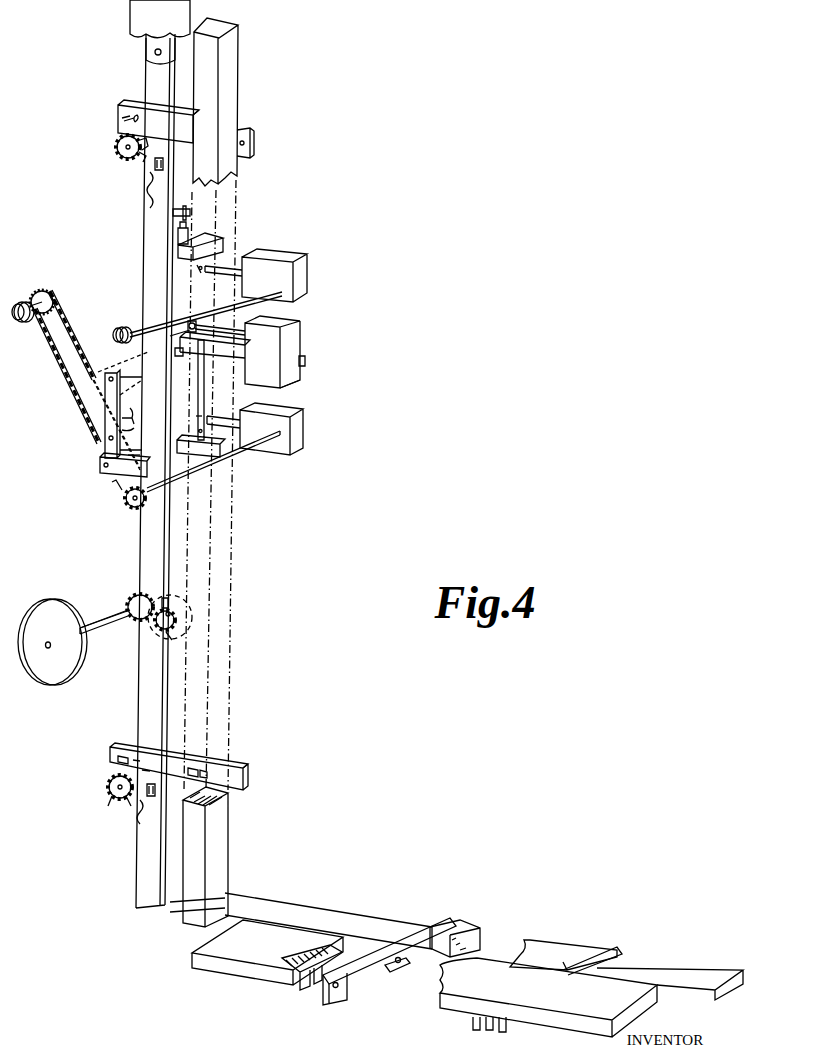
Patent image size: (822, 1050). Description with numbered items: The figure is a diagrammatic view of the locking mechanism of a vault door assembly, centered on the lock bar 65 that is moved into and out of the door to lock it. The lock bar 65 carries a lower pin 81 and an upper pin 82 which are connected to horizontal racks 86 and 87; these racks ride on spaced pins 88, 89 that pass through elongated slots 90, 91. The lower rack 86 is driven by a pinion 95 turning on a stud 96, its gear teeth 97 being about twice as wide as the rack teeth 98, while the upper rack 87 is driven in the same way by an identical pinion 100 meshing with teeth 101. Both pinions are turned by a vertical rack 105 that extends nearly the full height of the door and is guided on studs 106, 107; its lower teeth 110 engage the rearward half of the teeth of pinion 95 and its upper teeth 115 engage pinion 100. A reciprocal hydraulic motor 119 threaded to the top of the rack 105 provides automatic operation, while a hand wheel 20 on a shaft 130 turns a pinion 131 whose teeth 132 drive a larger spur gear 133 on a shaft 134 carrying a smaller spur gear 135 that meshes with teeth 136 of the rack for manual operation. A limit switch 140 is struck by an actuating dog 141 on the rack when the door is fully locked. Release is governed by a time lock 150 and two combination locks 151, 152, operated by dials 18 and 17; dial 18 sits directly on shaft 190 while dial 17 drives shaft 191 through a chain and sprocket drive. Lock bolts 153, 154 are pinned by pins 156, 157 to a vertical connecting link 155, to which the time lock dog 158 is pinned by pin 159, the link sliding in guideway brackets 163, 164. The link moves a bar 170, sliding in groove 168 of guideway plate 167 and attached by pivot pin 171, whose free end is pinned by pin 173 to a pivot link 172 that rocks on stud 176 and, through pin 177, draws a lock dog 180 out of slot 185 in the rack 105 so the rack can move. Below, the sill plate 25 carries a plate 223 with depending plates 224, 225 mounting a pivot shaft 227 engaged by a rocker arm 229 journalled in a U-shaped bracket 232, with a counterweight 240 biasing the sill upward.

The combination lock dial 17 is at (26, 325).
The combination lock dial 18 is at (118, 332).
The hand wheel 20 is at (48, 605).
The sill plate 25 is at (640, 1007).
The lock bar 65 is at (237, 47).
The rearwardly extending pin 81 is at (249, 779).
The rearwardly extending pin 82 is at (255, 143).
The lower rack 86 is at (242, 764).
The upper rack 87 is at (203, 113).
The horizontal spaced pin 88 is at (193, 766).
The horizontal spaced pin 89 is at (120, 754).
The elongated slot 90 is at (205, 768).
The elongated slot 91 is at (138, 758).
The pinion 95 is at (110, 805).
The stud 96 is at (108, 794).
The gear teeth 97 is at (131, 805).
The rack teeth 98 is at (142, 770).
The pinion 100 is at (125, 160).
The rack teeth 101 is at (190, 130).
The vertical rack 105 is at (150, 270).
The stud 106 is at (164, 166).
The stud 107 is at (158, 795).
The gear teeth 110 is at (150, 819).
The teeth 115 is at (152, 190).
The reciprocal hydraulic motor 119 is at (160, 32).
The shaft 130 is at (86, 620).
The pinion 131 is at (130, 608).
The pinion teeth 132 is at (144, 594).
The spur gear 133 is at (154, 626).
The shaft 134 is at (178, 642).
The spur gear 135 is at (178, 612).
The rack teeth 136 is at (168, 596).
The limit switch 140 is at (176, 236).
The actuating dog 141 is at (191, 214).
The time lock 150 is at (300, 340).
The upper combination lock 151 is at (308, 273).
The lower combination lock 152 is at (304, 433).
The lock bolt 153 is at (243, 273).
The lock bolt 154 is at (241, 425).
The vertical connecting link 155 is at (206, 388).
The connecting pin 156 is at (186, 278).
The connecting pin 157 is at (196, 417).
The lock dog 158 is at (235, 326).
The connecting pin 159 is at (167, 340).
The guideway bracket 163 is at (222, 460).
The guideway bracket 164 is at (224, 246).
The guideway plate 167 is at (300, 380).
The groove 168 is at (306, 362).
The movable bar 170 is at (228, 352).
The pivot pin 171 is at (197, 352).
The pivot link 172 is at (140, 398).
The pivot pin 173 is at (111, 373).
The stud 176 is at (136, 428).
The pin 177 is at (103, 470).
The lock dog 180 is at (126, 478).
The slot 185 is at (142, 455).
The shaft 190 is at (290, 290).
The shaft 191 is at (284, 452).
The plate 223 is at (345, 1000).
The depending supporting plate 224 is at (306, 992).
The depending supporting plate 225 is at (508, 1020).
The horizontal pivot shaft 227 is at (401, 962).
The rocker arm 229 is at (425, 930).
The U-shaped mounting bracket 232 is at (396, 972).
The counterweight 240 is at (268, 902).